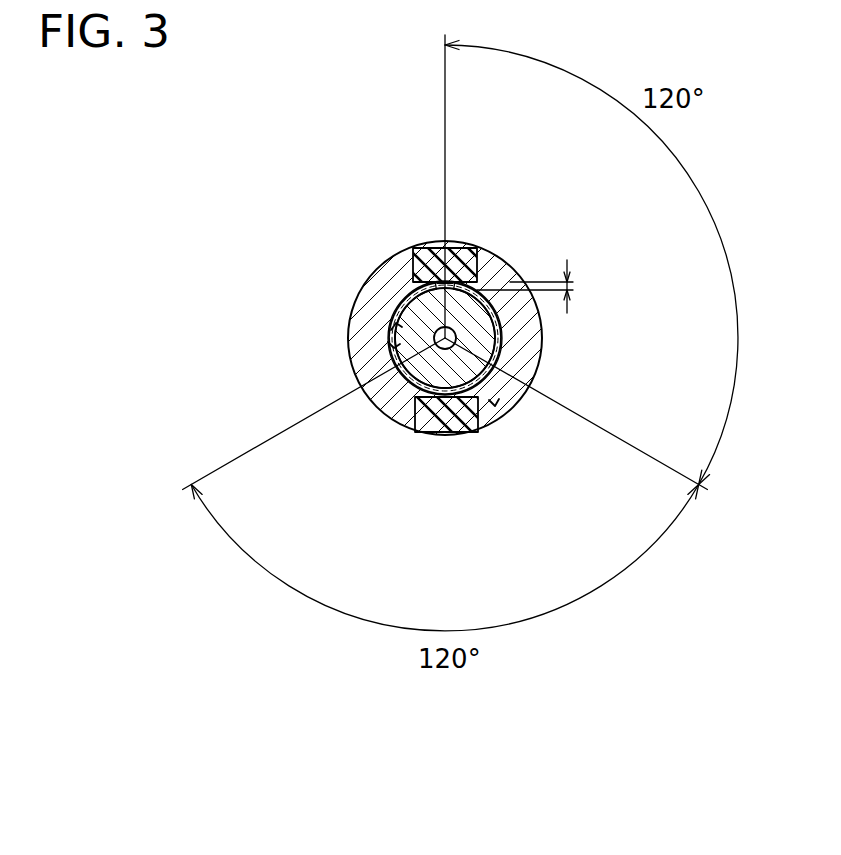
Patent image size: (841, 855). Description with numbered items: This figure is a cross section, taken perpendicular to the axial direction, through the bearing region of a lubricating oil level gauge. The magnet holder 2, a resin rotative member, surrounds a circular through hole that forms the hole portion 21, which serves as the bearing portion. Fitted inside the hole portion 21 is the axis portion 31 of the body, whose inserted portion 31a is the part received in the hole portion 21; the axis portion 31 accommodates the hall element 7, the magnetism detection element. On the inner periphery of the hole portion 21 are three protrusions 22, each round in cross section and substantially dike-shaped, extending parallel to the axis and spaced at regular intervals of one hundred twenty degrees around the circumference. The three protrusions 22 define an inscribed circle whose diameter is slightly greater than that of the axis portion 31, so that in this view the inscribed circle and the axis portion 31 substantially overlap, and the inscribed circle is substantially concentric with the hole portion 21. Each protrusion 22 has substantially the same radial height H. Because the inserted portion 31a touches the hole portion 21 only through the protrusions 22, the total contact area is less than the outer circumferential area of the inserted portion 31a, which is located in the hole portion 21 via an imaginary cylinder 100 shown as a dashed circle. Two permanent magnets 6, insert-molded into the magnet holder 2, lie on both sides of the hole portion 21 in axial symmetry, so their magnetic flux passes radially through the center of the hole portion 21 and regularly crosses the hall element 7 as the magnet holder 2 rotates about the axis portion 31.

The magnet holder 2 is at (405, 247).
The permanent magnets 6 is at (477, 265).
The hall element 7 is at (503, 328).
The hole portion 21 is at (495, 353).
The protrusions 22 is at (437, 288).
The axis portion 31 is at (405, 308).
The inserted portion 31a is at (392, 324).
The imaginary cylinder 100 is at (503, 332).
The height H is at (539, 286).